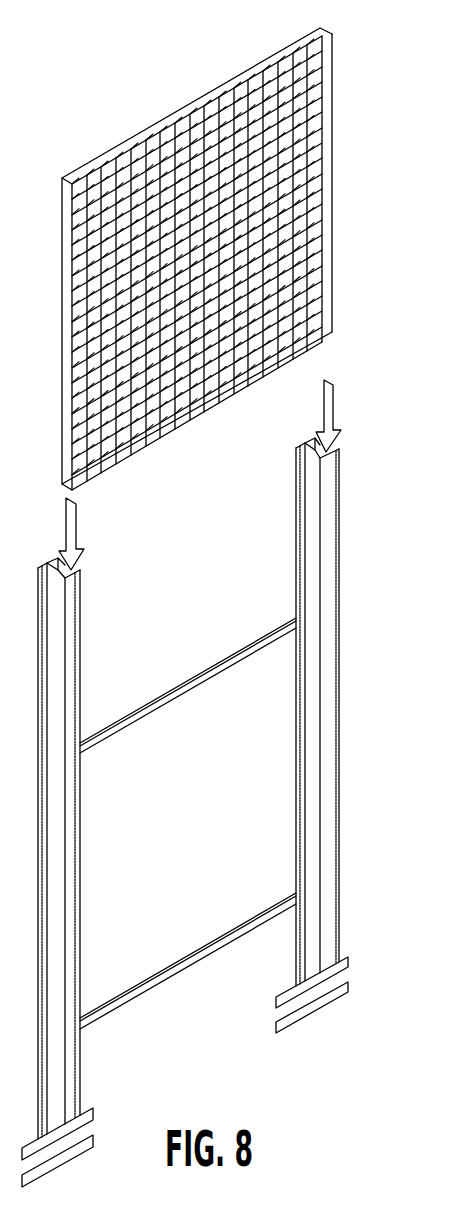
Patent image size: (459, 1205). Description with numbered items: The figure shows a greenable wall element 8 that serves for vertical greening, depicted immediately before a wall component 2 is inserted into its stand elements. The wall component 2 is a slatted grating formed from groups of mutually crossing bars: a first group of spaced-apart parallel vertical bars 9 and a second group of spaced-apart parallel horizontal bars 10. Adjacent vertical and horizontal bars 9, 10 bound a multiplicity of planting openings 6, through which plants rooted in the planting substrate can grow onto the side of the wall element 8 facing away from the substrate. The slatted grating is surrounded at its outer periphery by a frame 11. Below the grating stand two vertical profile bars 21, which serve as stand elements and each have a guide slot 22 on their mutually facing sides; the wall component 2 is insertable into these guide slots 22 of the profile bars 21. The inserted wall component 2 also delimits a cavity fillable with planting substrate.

The wall component 2 is at (246, 253).
The planting openings 6 is at (328, 62).
The wall element 8 is at (230, 682).
The vertical bars 9 is at (198, 130).
The horizontal bars 10 is at (326, 224).
The frame 11 is at (252, 74).
The vertical profile bars 21 is at (99, 651).
The guide slot 22 is at (88, 710).